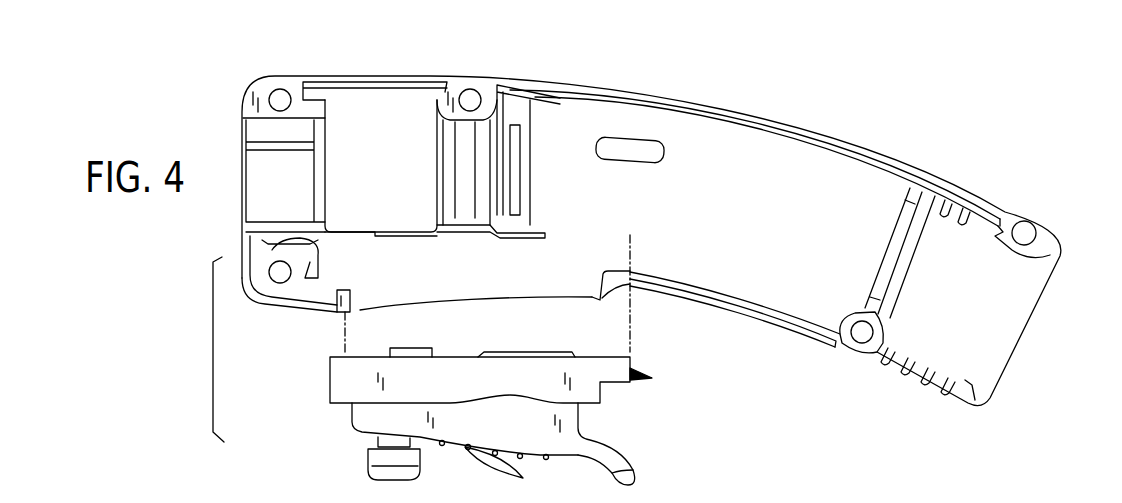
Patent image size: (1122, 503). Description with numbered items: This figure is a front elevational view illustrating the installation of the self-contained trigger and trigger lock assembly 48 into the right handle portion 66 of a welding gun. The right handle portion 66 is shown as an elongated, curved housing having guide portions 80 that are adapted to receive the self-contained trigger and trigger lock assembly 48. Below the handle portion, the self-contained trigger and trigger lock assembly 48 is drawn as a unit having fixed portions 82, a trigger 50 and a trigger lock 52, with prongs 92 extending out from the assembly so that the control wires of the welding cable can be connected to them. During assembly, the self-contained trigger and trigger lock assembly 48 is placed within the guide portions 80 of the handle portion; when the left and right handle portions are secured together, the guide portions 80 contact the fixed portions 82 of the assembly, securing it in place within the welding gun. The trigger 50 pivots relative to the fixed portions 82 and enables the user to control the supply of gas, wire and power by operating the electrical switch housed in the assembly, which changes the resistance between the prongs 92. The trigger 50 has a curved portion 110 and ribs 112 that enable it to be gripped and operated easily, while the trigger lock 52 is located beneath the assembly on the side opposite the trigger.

The right handle portion 66 is at (822, 137).
The guide portions 80 is at (395, 227).
The fixed portions 82 is at (330, 381).
The prongs 92 is at (643, 371).
The self-contained trigger and trigger lock assembly 48 is at (529, 419).
The trigger 50 is at (582, 438).
The trigger lock 52 is at (344, 451).
The curved portion 110 is at (632, 466).
The ribs 112 is at (512, 469).